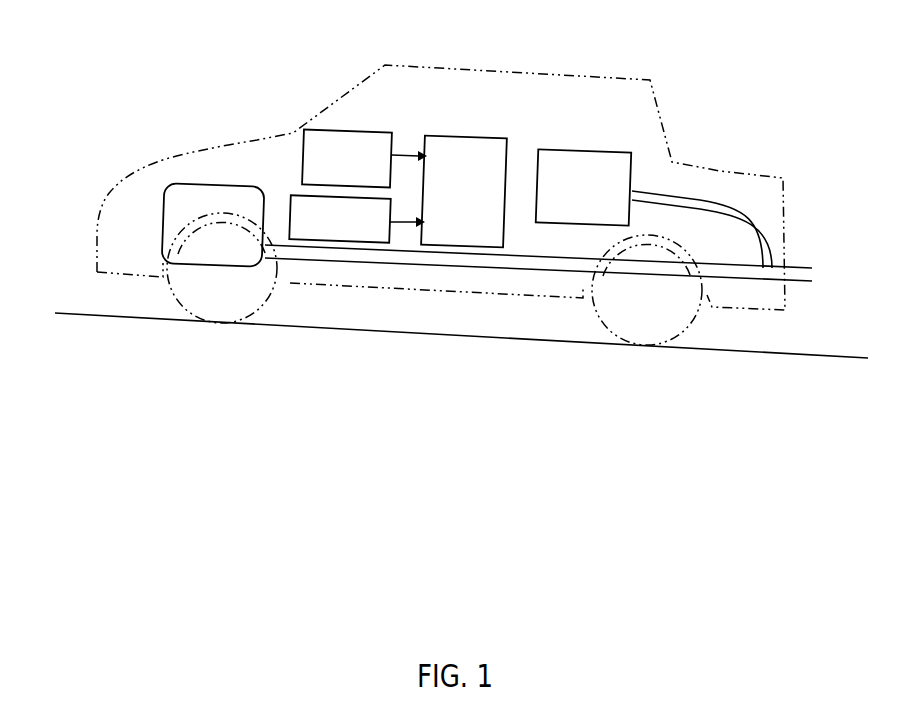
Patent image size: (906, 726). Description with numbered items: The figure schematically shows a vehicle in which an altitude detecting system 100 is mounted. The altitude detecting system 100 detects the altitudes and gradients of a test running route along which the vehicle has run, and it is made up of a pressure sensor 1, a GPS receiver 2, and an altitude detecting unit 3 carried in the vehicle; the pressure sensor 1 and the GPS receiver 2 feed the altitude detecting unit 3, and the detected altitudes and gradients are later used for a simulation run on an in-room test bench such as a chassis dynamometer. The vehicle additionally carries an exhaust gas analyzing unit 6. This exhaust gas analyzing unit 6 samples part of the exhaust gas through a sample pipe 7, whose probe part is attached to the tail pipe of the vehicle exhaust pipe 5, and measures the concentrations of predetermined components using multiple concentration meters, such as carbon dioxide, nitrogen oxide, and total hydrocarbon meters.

The altitude detecting system 100 is at (441, 103).
The pressure sensor 1 is at (290, 197).
The GPS receiver 2 is at (347, 130).
The altitude detecting unit 3 is at (506, 156).
The vehicle exhaust pipe 5 is at (535, 274).
The exhaust gas analyzing unit 6 is at (630, 152).
The sample pipe 7 is at (713, 203).